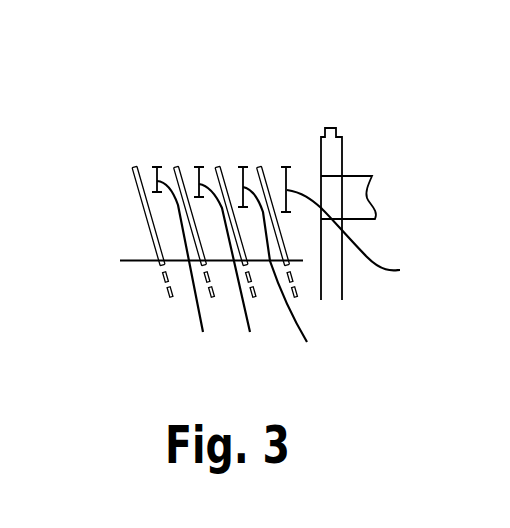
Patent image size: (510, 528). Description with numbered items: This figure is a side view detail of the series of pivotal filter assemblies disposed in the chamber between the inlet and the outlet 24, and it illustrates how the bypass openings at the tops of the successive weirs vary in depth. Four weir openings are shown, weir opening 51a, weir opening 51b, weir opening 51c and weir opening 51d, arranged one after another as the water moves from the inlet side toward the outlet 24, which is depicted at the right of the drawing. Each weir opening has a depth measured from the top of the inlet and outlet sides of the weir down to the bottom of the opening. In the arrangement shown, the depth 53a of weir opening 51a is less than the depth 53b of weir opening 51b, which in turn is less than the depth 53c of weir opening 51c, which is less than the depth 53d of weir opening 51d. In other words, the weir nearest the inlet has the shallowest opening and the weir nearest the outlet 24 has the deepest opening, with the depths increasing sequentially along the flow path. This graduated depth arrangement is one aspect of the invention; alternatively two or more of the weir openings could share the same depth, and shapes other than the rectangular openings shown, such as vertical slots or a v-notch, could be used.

The weir opening 51a is at (134, 168).
The weir opening 51b is at (177, 168).
The weir opening 51c is at (217, 168).
The weir opening 51d is at (259, 168).
The depth of weir opening 53a is at (188, 267).
The depth of weir opening 53b is at (233, 267).
The depth of weir opening 53c is at (283, 270).
The depth of weir opening 53d is at (357, 226).
The outlet 24 is at (365, 176).